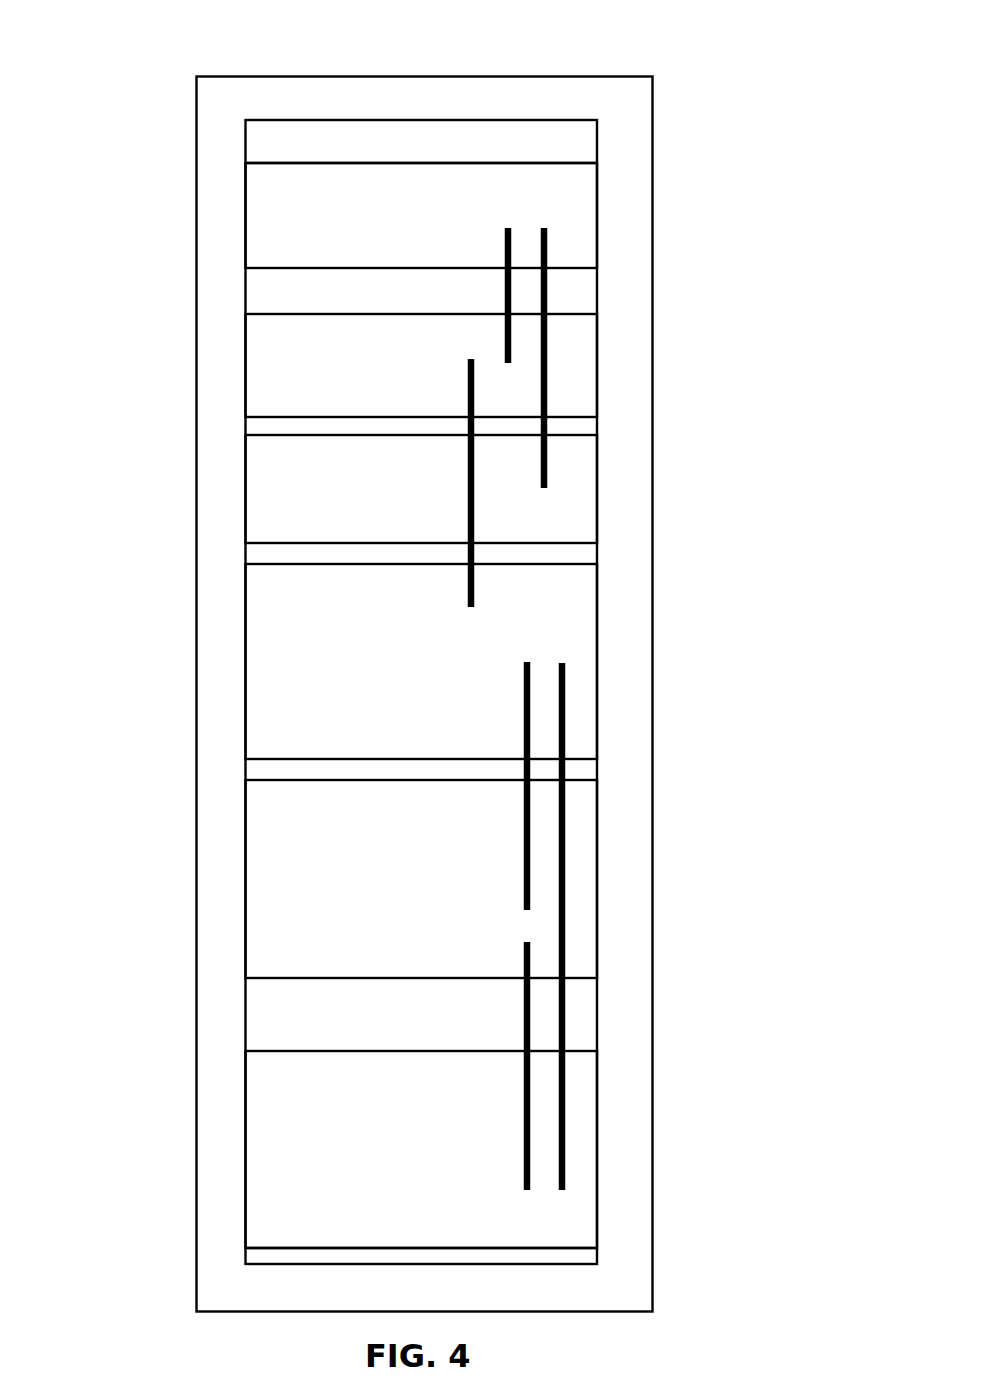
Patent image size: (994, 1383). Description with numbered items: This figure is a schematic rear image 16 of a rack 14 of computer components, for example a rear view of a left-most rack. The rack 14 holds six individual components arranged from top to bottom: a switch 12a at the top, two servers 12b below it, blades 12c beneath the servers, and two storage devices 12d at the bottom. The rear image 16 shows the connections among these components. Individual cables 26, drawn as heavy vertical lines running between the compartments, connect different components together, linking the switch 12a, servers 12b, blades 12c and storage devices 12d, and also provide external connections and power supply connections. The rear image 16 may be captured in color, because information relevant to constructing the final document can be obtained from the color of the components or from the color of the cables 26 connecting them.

The rack 14 is at (541, 119).
The rear image 16 is at (653, 233).
The switch 12a is at (245, 217).
The server 12b is at (245, 362).
The blades 12c is at (245, 658).
The storage device 12d is at (245, 875).
The cable 26 is at (505, 239).